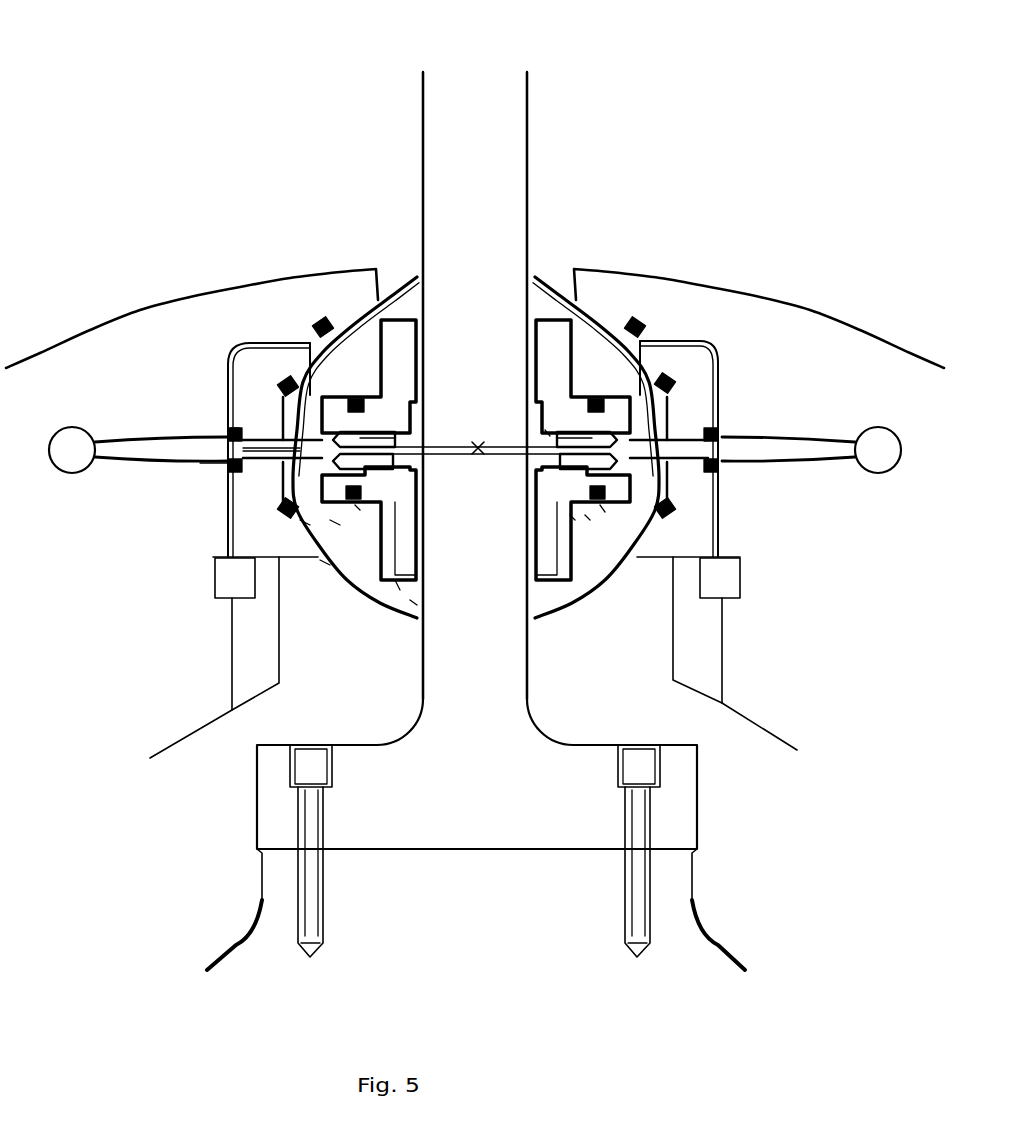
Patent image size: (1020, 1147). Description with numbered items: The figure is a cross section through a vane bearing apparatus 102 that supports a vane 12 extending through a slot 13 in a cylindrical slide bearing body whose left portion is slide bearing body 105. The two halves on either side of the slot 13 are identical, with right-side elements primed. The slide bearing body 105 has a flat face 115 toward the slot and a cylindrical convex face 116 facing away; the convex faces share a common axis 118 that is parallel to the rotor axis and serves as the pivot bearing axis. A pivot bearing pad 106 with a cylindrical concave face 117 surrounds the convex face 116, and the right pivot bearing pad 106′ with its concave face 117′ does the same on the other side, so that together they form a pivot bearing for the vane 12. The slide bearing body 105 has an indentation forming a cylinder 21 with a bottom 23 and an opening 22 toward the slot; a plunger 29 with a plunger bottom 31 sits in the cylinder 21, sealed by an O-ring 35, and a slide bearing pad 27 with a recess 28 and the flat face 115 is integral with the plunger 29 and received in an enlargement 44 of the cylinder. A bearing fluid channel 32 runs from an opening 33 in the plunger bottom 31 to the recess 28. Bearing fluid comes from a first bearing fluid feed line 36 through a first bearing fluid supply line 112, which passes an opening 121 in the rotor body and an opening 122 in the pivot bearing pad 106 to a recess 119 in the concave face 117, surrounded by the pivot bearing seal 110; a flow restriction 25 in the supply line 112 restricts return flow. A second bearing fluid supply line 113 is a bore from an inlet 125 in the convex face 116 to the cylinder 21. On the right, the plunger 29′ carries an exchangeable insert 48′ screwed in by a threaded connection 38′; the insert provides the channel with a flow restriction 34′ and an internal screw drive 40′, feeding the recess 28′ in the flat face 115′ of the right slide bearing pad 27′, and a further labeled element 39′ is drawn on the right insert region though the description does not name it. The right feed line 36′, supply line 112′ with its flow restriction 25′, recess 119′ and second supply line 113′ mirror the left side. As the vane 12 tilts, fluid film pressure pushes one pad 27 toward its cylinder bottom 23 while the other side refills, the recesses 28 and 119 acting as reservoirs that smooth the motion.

The vane bearing apparatus 102 is at (330, 122).
The vane 12 is at (495, 157).
The slot 13 is at (420, 268).
The enlargement of cylinder 44 is at (393, 300).
The slide bearing body 105 is at (341, 272).
The flat face 115 is at (412, 562).
The flat face 115′ is at (516, 345).
The bearing fluid channel 32 is at (392, 450).
The recess 28 is at (405, 470).
The upper lip seal 39′ is at (530, 455).
The internal screw drive 40′ is at (545, 495).
The common axis 118 is at (477, 443).
The pivot bearing pad 106 is at (258, 548).
The pivot bearing pad 106′ is at (672, 372).
The cylindrical concave face 117 is at (262, 612).
The cylindrical concave face 117′ is at (652, 520).
The first bearing fluid feed line 36 is at (65, 466).
The first bearing fluid feed line 36′ is at (882, 468).
The flow restriction 25 is at (150, 460).
The flow restriction 25′ is at (805, 460).
The plunger 29 is at (348, 402).
The plunger 29′ is at (592, 400).
The pivot bearing seal 110 is at (281, 378).
The slide bearing pad 27′ is at (642, 380).
The plunger bottom 31 is at (328, 425).
The opening 33 is at (326, 436).
The first bearing fluid supply line 112 is at (225, 440).
The first bearing fluid supply line 112′ is at (745, 435).
The opening 122 is at (292, 452).
The second bearing fluid supply line 113 is at (283, 470).
The second bearing fluid supply line 113′ is at (640, 447).
The recess 119 is at (285, 500).
The recess 119′ is at (665, 488).
The opening 121 is at (232, 456).
The inlet 125 is at (235, 452).
The cylinder bottom 23 is at (322, 510).
The cylinder 21 is at (347, 512).
The opening 22 is at (360, 505).
The O-ring 35 is at (330, 505).
The cylindrical convex face 116 is at (395, 600).
The slide bearing pad 27 is at (420, 598).
The recess 28′ is at (522, 430).
The flow restriction 34′ is at (605, 508).
The exchangeable insert 48′ is at (588, 510).
The threaded connection 38′ is at (572, 515).